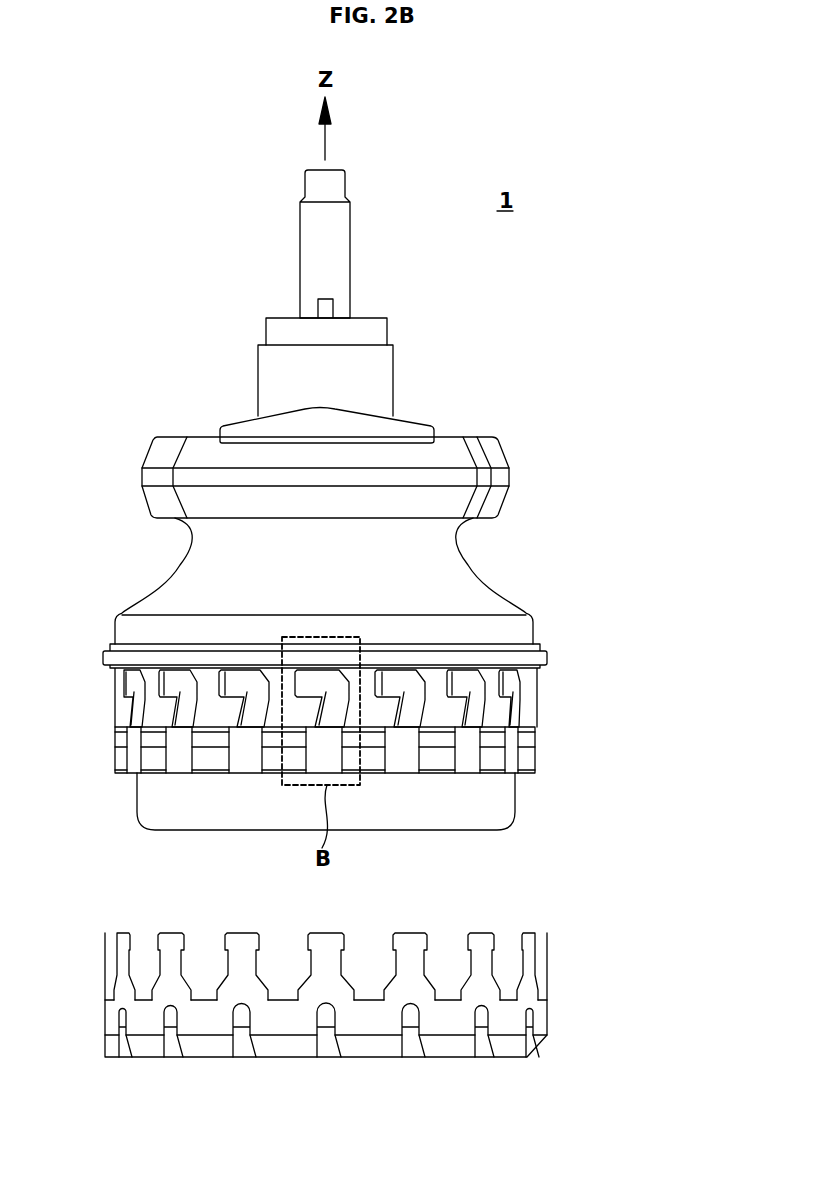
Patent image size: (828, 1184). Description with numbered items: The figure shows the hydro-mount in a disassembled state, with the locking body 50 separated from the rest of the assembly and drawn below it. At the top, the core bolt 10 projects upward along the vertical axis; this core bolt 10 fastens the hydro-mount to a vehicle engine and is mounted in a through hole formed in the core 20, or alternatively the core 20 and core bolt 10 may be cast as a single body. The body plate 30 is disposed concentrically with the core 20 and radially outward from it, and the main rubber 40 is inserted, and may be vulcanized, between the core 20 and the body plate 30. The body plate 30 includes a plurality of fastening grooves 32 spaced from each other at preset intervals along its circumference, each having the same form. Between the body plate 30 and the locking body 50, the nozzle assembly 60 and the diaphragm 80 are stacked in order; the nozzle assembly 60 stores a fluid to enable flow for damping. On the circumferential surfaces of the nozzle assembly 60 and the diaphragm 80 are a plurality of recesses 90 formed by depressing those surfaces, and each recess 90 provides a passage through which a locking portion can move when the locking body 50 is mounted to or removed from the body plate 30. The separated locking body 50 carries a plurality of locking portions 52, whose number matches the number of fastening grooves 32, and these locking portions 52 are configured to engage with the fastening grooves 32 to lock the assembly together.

The core bolt 10 is at (335, 259).
The core 20 is at (373, 330).
The body plate 30 is at (543, 658).
The fastening groove 32 is at (226, 660).
The main rubber 40 is at (458, 460).
The locking body 50 is at (395, 959).
The locking portion 52 is at (480, 940).
The nozzle assembly 60 is at (528, 760).
The diaphragm 80 is at (503, 798).
The recess 90 is at (173, 757).